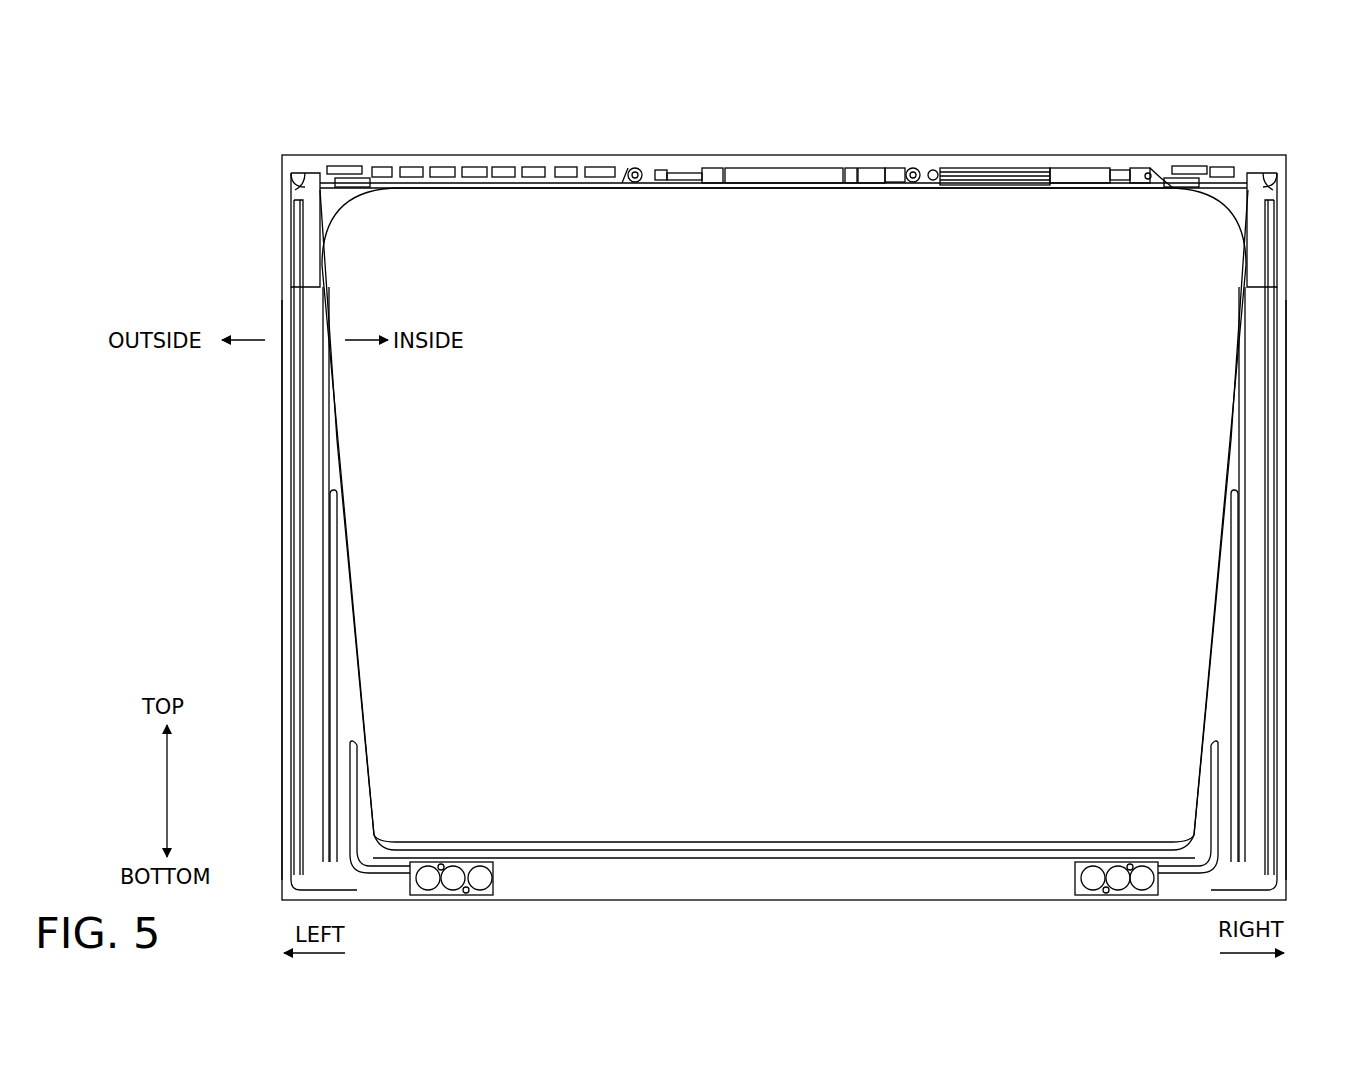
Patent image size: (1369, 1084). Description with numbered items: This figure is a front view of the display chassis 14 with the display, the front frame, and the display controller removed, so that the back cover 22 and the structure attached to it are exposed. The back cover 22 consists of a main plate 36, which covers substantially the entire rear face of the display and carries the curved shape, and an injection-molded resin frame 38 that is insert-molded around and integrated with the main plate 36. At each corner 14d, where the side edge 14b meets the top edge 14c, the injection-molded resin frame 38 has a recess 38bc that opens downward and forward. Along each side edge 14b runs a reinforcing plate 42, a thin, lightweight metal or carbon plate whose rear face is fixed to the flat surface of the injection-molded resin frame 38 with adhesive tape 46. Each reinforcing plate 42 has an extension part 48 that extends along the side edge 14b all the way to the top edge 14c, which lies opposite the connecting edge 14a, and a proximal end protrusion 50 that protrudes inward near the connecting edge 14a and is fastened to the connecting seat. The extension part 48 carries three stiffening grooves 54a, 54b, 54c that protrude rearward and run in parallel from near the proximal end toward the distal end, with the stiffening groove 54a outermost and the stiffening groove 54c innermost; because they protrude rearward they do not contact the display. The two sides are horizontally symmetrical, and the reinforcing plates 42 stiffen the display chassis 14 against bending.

The display chassis 14 is at (1132, 100).
The connecting edge 14a is at (782, 900).
The side edge 14b is at (282, 595).
The top edge 14c is at (782, 156).
The corner 14d is at (289, 156).
The back cover 22 is at (608, 96).
The main plate 36 is at (578, 240).
The injection-molded resin frame 38 is at (512, 165).
The recess 38bc is at (300, 185).
The reinforcing plate 42 is at (352, 710).
The adhesive tape 46 is at (320, 540).
The extension part 48 is at (305, 270).
The proximal end protrusion 50 is at (405, 900).
The stiffening groove 54a is at (300, 400).
The stiffening groove 54b is at (334, 652).
The stiffening groove 54c is at (352, 797).